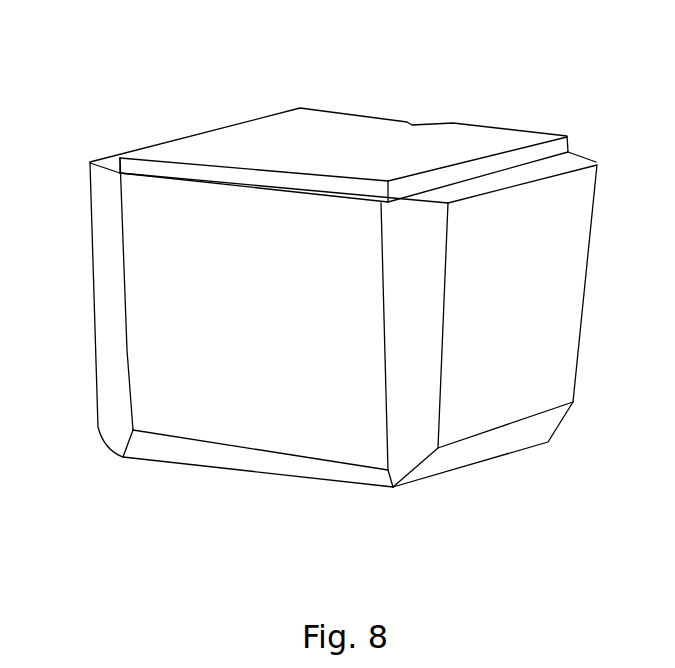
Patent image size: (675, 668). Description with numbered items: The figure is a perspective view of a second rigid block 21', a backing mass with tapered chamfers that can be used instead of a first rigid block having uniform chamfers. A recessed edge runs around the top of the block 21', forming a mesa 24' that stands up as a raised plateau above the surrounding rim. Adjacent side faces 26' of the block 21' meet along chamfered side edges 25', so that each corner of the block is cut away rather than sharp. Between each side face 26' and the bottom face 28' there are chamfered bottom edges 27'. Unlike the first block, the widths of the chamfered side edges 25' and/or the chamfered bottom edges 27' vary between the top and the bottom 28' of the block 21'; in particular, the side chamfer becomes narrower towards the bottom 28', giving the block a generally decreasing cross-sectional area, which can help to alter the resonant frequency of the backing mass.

The second rigid block 21' is at (308, 267).
The mesa 24' is at (343, 138).
The chamfered side edges 25' is at (233, 325).
The side faces 26' is at (322, 314).
The chamfered bottom edges 27' is at (483, 452).
The bottom face 28' is at (258, 491).